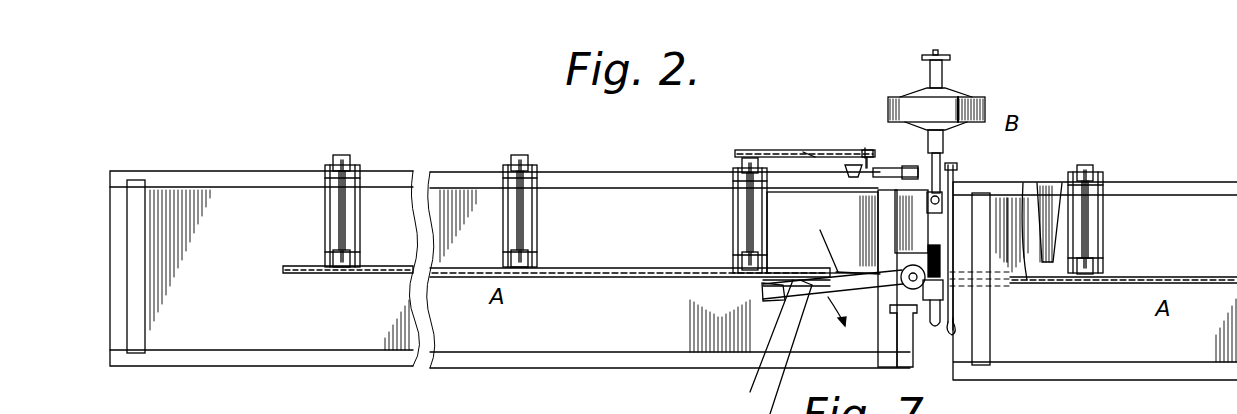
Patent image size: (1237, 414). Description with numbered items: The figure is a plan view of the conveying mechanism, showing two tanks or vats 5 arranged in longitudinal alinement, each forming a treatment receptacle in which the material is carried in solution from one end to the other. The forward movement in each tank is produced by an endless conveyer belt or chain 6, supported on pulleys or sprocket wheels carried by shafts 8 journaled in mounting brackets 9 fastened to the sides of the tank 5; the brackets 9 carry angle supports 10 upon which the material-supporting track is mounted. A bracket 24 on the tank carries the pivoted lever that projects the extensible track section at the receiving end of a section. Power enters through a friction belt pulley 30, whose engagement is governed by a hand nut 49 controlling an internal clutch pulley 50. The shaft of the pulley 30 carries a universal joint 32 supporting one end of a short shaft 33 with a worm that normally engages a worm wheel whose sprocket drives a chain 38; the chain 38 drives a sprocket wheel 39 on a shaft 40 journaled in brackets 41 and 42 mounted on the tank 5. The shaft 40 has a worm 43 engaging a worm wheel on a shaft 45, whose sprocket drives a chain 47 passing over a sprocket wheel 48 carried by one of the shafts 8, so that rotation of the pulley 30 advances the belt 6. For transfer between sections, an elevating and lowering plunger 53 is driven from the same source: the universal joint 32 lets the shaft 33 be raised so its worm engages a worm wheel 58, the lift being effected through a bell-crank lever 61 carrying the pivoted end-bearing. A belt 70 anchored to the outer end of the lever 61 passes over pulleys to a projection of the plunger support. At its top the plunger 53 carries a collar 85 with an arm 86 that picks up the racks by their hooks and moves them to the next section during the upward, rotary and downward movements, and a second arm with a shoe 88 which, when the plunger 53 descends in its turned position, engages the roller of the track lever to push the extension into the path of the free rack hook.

The tank or vat 5 is at (246, 362).
The endless conveyer belt or chain 6 is at (621, 268).
The shaft 8 is at (352, 223).
The mounting bracket 9 is at (345, 227).
The angle support 10 is at (360, 264).
The bracket 24 is at (1030, 235).
The friction belt pulley 30 is at (985, 110).
The universal joint 32 is at (933, 206).
The short shaft 33 is at (868, 160).
The chain 38 is at (953, 250).
The sprocket wheel 39 is at (945, 156).
The shaft 40 is at (866, 170).
The bracket 41 is at (910, 168).
The bracket 42 is at (865, 148).
The worm 43 is at (822, 232).
The shaft 45 is at (868, 148).
The chain 47 is at (803, 152).
The sprocket wheel 48 is at (735, 155).
The hand nut 49 is at (950, 58).
The internal clutch pulley 50 is at (952, 95).
The elevating and lowering plunger 53 is at (903, 280).
The worm wheel 58 is at (906, 250).
The bell-crank lever 61 is at (935, 305).
The belt 70 is at (948, 325).
The collar 85 is at (910, 288).
The arm 86 is at (838, 272).
The shoe 88 is at (780, 300).